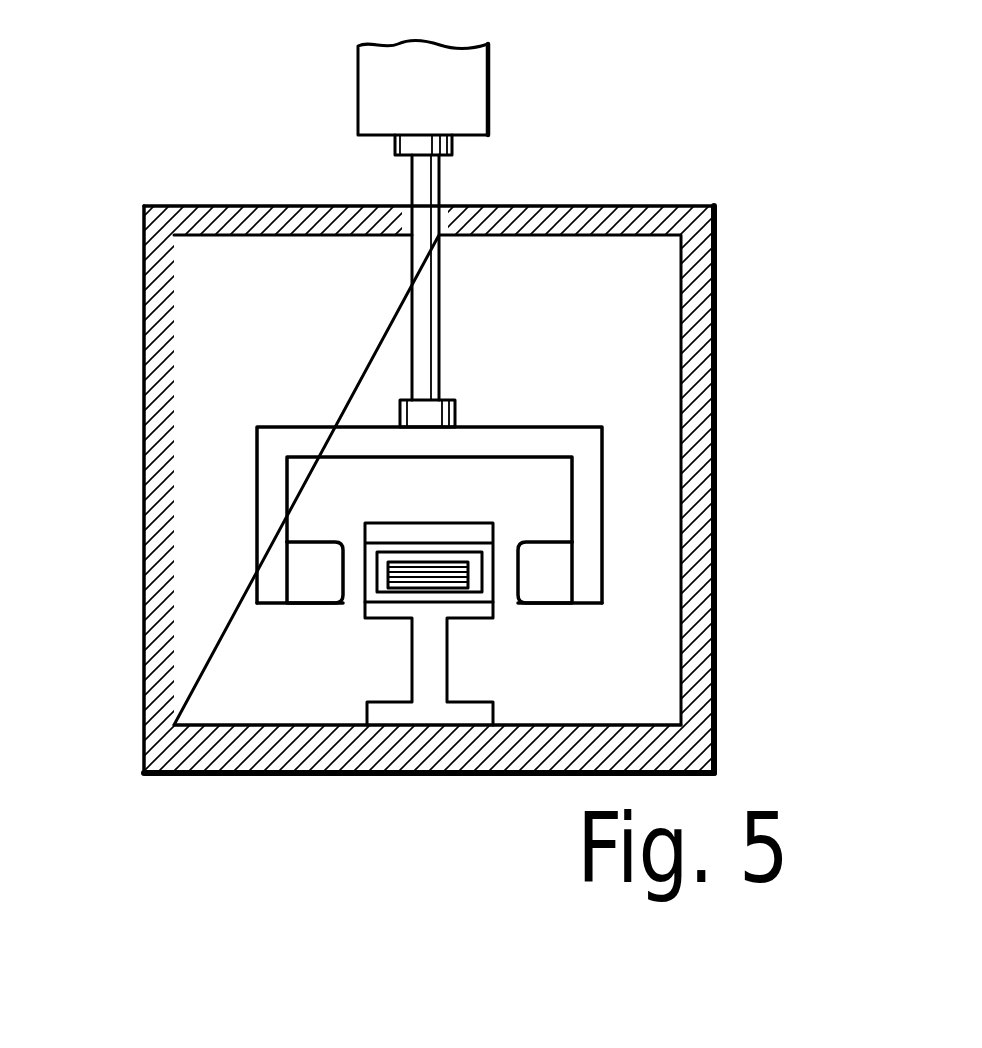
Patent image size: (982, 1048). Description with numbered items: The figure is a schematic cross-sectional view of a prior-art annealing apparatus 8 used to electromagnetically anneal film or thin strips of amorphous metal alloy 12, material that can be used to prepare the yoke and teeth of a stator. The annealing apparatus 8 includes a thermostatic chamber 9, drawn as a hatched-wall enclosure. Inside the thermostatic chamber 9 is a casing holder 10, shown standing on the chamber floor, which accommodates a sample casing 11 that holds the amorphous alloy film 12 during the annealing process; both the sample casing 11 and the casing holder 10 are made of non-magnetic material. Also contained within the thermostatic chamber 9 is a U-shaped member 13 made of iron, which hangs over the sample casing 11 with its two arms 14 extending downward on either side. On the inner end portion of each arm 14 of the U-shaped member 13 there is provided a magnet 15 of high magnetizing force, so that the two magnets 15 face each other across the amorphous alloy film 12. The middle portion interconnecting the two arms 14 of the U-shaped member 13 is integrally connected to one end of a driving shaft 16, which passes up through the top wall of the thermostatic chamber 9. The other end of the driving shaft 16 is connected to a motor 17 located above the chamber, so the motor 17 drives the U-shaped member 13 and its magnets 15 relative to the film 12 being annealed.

The annealing apparatus 8 is at (514, 456).
The thermostatic chamber 9 is at (605, 725).
The casing holder 10 is at (396, 609).
The sample casing 11 is at (486, 548).
The amorphous metal alloy 12 is at (455, 573).
The U-shaped member 13 is at (572, 433).
The arm 14 is at (272, 568).
The magnet 15 is at (312, 555).
The driving shaft 16 is at (422, 183).
The motor 17 is at (460, 80).